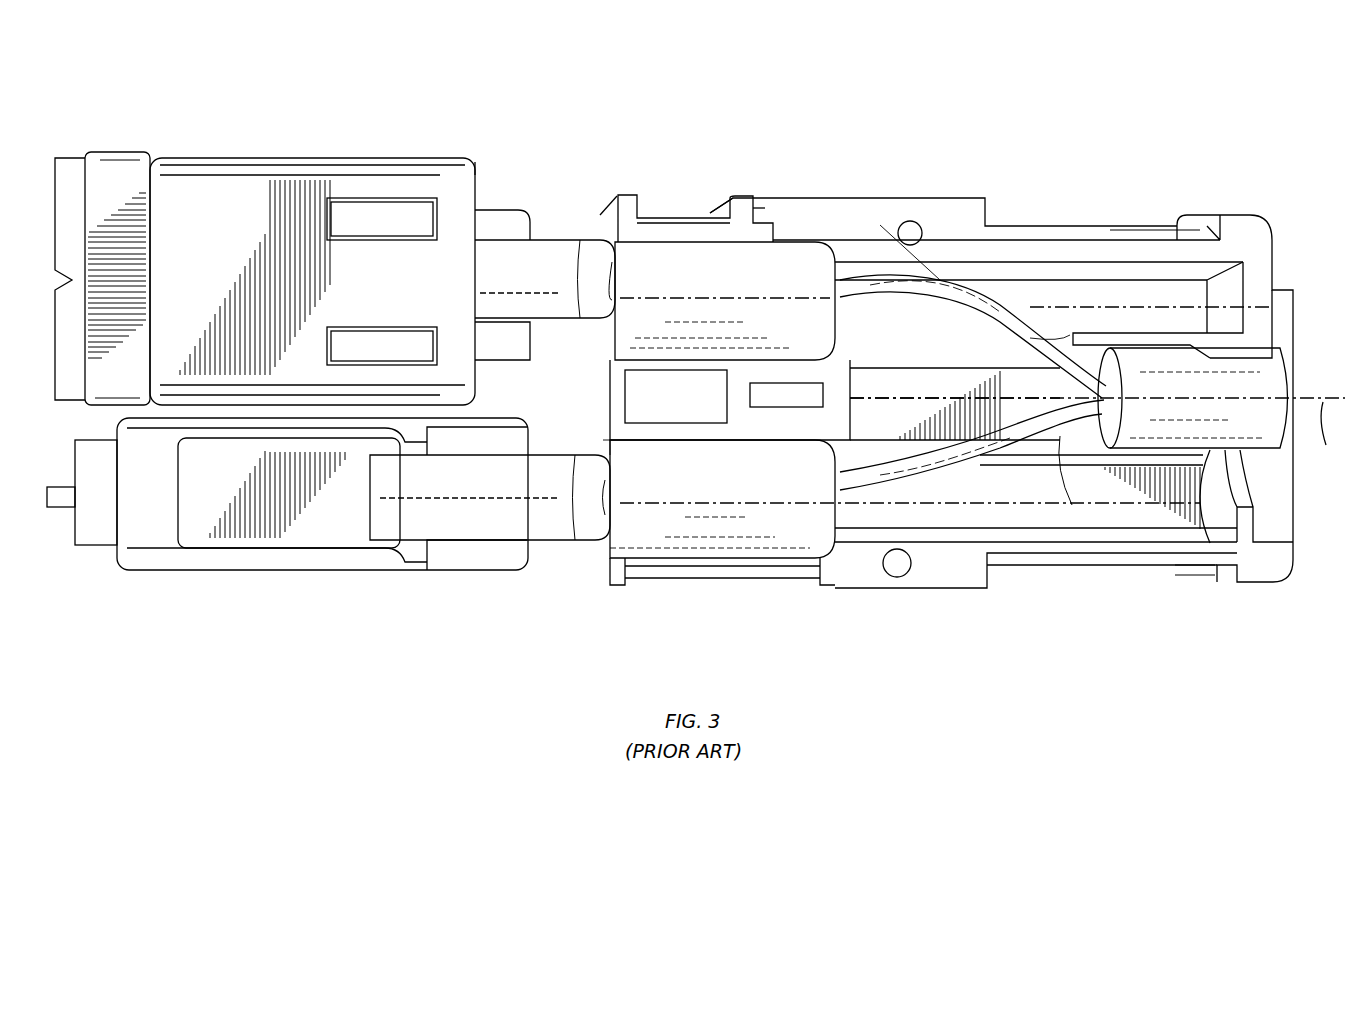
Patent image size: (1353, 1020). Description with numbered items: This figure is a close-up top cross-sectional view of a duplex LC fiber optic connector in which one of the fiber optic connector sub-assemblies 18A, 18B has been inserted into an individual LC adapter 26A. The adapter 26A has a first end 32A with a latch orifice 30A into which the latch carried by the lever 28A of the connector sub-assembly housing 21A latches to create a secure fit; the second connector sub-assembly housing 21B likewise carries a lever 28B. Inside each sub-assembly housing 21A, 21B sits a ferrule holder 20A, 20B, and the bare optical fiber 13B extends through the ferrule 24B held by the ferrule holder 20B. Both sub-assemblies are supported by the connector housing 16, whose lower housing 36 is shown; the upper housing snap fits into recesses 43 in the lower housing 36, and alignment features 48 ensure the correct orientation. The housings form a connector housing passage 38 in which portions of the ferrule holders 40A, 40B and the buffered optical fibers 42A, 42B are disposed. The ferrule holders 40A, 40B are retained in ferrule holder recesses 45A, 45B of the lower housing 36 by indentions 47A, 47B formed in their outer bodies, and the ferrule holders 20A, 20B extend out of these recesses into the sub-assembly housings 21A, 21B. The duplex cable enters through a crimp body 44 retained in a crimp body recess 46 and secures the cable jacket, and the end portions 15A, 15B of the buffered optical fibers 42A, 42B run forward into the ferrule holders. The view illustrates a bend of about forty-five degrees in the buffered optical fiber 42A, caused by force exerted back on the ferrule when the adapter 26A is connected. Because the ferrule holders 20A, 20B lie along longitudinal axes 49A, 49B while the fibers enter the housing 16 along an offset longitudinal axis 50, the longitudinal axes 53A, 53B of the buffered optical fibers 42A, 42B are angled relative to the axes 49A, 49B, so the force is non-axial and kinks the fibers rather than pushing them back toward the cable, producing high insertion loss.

The bare optical fiber 13B is at (58, 508).
The end portion of buffered optical fiber 15A is at (956, 268).
The end portion of buffered optical fiber 15B is at (962, 462).
The connector housing 16 is at (888, 228).
The fiber optic connector sub-assembly 18A is at (568, 190).
The fiber optic connector sub-assembly 18B is at (562, 570).
The ferrule holder 20A is at (684, 262).
The ferrule holder 20B is at (686, 530).
The connector sub-assembly housing 21A is at (507, 252).
The connector sub-assembly housing 21B is at (383, 572).
The ferrule 24B is at (100, 546).
The LC adapter 26A is at (256, 158).
The lever 28A is at (512, 228).
The lever 28B is at (468, 526).
The latch orifice 30A is at (402, 340).
The first end of LC adapter 32A is at (478, 162).
The lower housing 36 is at (855, 196).
The connector housing passage 38 is at (955, 415).
The ferrule holder 40A is at (718, 240).
The ferrule holder 40B is at (716, 568).
The buffered optical fiber 42A is at (1022, 300).
The buffered optical fiber 42B is at (1056, 430).
The recesses 43 is at (670, 222).
The crimp body 44 is at (1278, 372).
The ferrule holder recess 45A is at (762, 226).
The ferrule holder recess 45B is at (770, 566).
The crimp body recess 46 is at (1240, 566).
The indention 47A is at (655, 222).
The indention 47B is at (672, 440).
The alignment features 48 is at (922, 244).
The longitudinal axis 49A is at (1192, 290).
The longitudinal axis 49B is at (1145, 505).
The longitudinal axis 50 is at (1326, 437).
The longitudinal axis of buffered optical fiber 53A is at (1040, 336).
The longitudinal axis of buffered optical fiber 53B is at (985, 452).